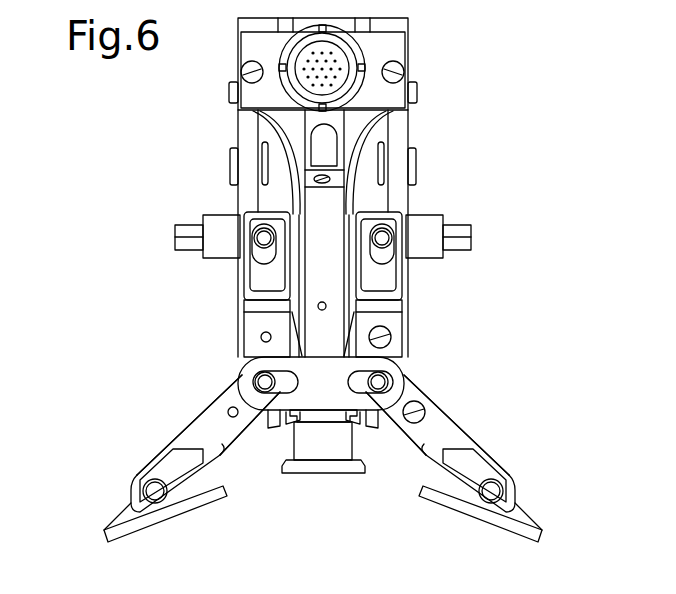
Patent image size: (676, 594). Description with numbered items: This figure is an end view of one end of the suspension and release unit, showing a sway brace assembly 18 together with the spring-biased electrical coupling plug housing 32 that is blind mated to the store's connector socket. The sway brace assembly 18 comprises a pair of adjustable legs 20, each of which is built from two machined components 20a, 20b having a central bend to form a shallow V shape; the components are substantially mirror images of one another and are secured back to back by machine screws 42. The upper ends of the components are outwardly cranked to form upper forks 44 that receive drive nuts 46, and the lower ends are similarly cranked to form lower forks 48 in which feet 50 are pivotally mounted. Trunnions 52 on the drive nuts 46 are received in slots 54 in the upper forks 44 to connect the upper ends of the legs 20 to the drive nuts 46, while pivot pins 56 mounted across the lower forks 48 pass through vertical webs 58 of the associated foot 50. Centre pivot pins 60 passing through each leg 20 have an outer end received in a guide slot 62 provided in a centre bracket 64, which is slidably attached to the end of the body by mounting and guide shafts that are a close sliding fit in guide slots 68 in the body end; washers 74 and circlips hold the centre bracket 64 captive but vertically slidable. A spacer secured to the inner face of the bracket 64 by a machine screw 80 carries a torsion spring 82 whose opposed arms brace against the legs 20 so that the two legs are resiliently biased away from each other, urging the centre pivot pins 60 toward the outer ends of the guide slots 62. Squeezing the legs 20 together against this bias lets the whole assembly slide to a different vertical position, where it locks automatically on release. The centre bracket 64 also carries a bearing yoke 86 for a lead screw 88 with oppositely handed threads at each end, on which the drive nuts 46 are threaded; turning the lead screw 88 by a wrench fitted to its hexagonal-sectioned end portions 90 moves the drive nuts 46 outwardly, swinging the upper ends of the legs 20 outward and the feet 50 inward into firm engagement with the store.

The sway brace assembly 18 is at (484, 322).
The adjustable leg 20 is at (180, 385).
The machined component 20a is at (198, 427).
The machined component 20b is at (323, 423).
The electrical coupling plug housing 32 is at (320, 442).
The machine screw 42 is at (261, 337).
The upper fork 44 is at (264, 294).
The drive nut 46 is at (242, 213).
The lower fork 48 is at (150, 463).
The foot 50 is at (202, 508).
The trunnion 52 is at (258, 242).
The slot 54 is at (262, 261).
The pivot pin 56 is at (157, 497).
The vertical web 58 is at (125, 519).
The centre pivot pin 60 is at (255, 381).
The guide slot 62 is at (282, 391).
The centre bracket 64 is at (322, 208).
The guide slot 68 is at (318, 140).
The washer 74 is at (332, 163).
The machine screw 80 is at (321, 301).
The torsion spring 82 is at (321, 381).
The bearing yoke 86 is at (311, 208).
The lead screw 88 is at (217, 223).
The hexagonal-sectioned end portion 90 is at (178, 233).